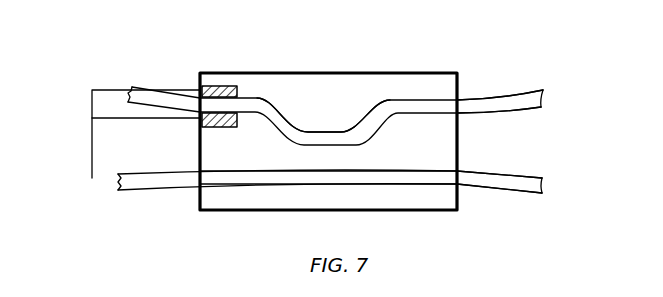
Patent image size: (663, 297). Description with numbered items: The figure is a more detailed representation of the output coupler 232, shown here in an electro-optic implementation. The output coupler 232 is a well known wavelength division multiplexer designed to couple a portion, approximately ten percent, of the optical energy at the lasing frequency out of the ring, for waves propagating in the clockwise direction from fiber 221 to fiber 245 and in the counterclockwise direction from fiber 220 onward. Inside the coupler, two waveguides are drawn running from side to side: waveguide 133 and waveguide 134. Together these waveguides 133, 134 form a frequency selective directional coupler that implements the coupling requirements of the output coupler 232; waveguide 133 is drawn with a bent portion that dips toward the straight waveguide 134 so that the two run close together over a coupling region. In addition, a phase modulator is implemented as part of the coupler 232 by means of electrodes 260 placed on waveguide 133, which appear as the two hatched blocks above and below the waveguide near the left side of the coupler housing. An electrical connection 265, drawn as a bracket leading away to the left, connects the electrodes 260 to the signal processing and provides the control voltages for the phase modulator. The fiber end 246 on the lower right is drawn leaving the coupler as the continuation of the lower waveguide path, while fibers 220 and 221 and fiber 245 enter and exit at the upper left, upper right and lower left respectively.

The output coupler 232 is at (457, 73).
The electrodes 260 is at (238, 120).
The fiber 220 is at (177, 88).
The waveguide 133 is at (315, 130).
The fiber 221 is at (524, 90).
The fiber 245 is at (145, 192).
The waveguide 134 is at (302, 185).
The lower strip end 246 is at (513, 173).
The electrical connection 265 is at (92, 150).